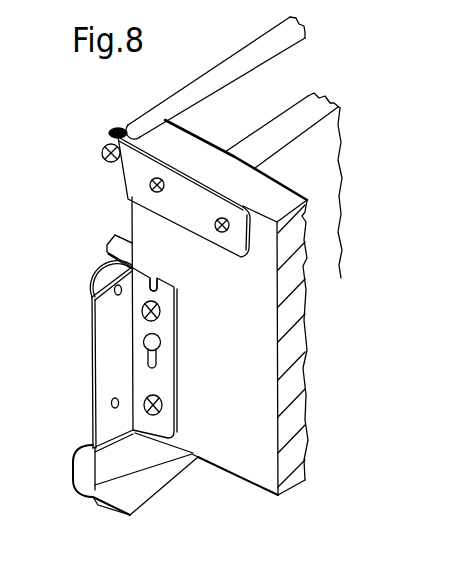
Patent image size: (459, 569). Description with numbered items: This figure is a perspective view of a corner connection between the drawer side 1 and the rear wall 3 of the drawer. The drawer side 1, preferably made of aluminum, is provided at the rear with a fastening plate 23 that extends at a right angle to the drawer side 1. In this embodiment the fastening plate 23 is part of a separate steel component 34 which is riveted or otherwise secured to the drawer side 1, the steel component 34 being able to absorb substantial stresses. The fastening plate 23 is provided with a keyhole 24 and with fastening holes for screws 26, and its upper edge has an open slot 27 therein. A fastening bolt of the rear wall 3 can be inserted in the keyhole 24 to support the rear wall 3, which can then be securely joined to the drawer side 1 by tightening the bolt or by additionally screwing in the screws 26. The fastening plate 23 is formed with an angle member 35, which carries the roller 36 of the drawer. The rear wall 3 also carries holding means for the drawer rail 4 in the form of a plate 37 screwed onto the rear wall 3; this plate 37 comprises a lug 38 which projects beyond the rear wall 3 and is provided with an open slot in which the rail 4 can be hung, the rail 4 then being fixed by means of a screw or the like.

The drawer side 1 is at (313, 178).
The rear wall 3 is at (253, 363).
The rail 4 is at (252, 58).
The fastening plate 23 is at (153, 385).
The keyhole 24 is at (161, 344).
The screws 26 is at (161, 311).
The open slot 27 is at (162, 283).
The steel component 34 is at (122, 382).
The angle member 35 is at (113, 353).
The roller 36 is at (102, 279).
The plate 37 is at (187, 205).
The lug 38 is at (130, 179).